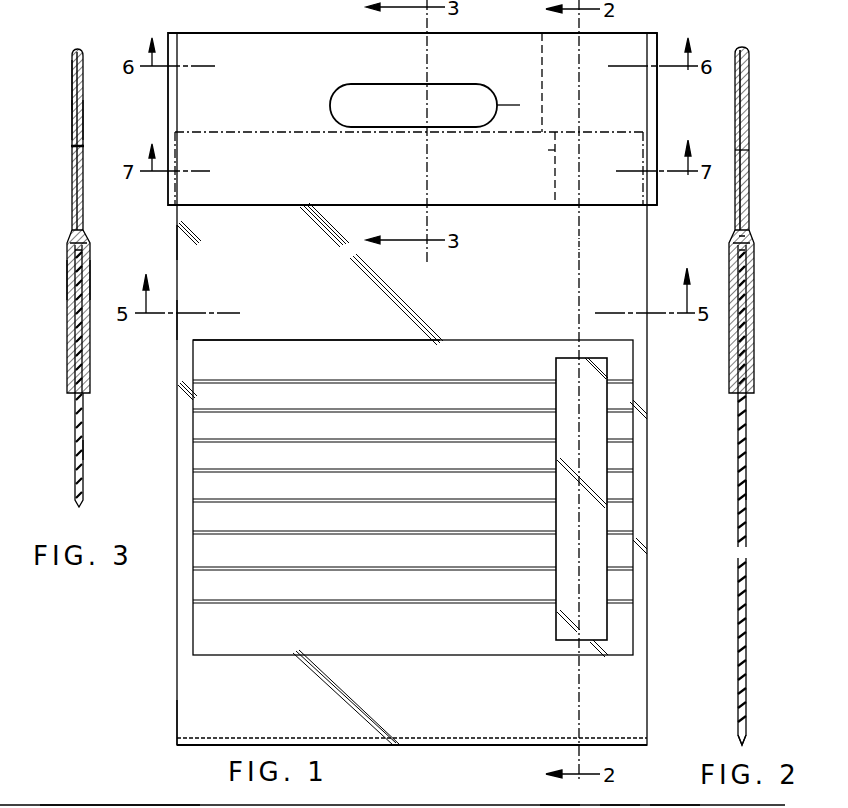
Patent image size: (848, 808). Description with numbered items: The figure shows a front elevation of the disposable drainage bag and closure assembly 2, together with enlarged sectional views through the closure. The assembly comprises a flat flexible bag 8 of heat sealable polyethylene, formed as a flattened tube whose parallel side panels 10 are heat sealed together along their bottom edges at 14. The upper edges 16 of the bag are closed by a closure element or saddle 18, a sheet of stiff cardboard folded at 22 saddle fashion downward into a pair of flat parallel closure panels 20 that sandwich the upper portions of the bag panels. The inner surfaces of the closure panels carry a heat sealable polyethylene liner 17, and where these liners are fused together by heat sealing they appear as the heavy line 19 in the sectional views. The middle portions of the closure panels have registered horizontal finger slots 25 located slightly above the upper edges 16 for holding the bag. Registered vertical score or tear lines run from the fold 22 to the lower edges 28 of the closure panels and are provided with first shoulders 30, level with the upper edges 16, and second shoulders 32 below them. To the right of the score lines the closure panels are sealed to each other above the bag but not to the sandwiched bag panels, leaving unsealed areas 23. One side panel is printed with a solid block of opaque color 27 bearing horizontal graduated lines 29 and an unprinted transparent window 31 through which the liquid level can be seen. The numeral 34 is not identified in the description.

In FIG. 1, the disposable drainage bag and closure assembly 2 is at (170, 252).
In FIG. 1, the flat flexible bag 8 is at (572, 246).
In FIG. 1, the side panels 10 is at (200, 302).
In FIG. 1, the bottom edges heat seal 14 is at (428, 745).
In FIG. 2, the bottom edges heat seal 14 is at (737, 728).
In FIG. 1, the upper edges 16 is at (240, 130).
In FIG. 2, the heat sealable polyethylene liner 17 is at (754, 273).
In FIG. 3, the closure element or saddle 18 is at (62, 103).
In FIG. 2, the fused polyethylene liners 19 is at (752, 126).
In FIG. 1, the closure panels 20 is at (240, 45).
In FIG. 2, the closure panels 20 is at (735, 78).
In FIG. 3, the fold 22 is at (78, 48).
In FIG. 1, the unsealed areas 23 is at (656, 807).
In FIG. 1, the finger slots 25 is at (462, 807).
In FIG. 1, the solid block of opaque color 27 is at (343, 360).
In FIG. 1, the lower edges of closure panels 28 is at (507, 205).
In FIG. 1, the horizontal graduated lines 29 is at (408, 378).
In FIG. 1, the first shoulders 30 is at (545, 130).
In FIG. 1, the window 31 is at (565, 362).
In FIG. 1, the second shoulders 32 is at (548, 160).
In FIG. 1, the seam 34 is at (612, 807).